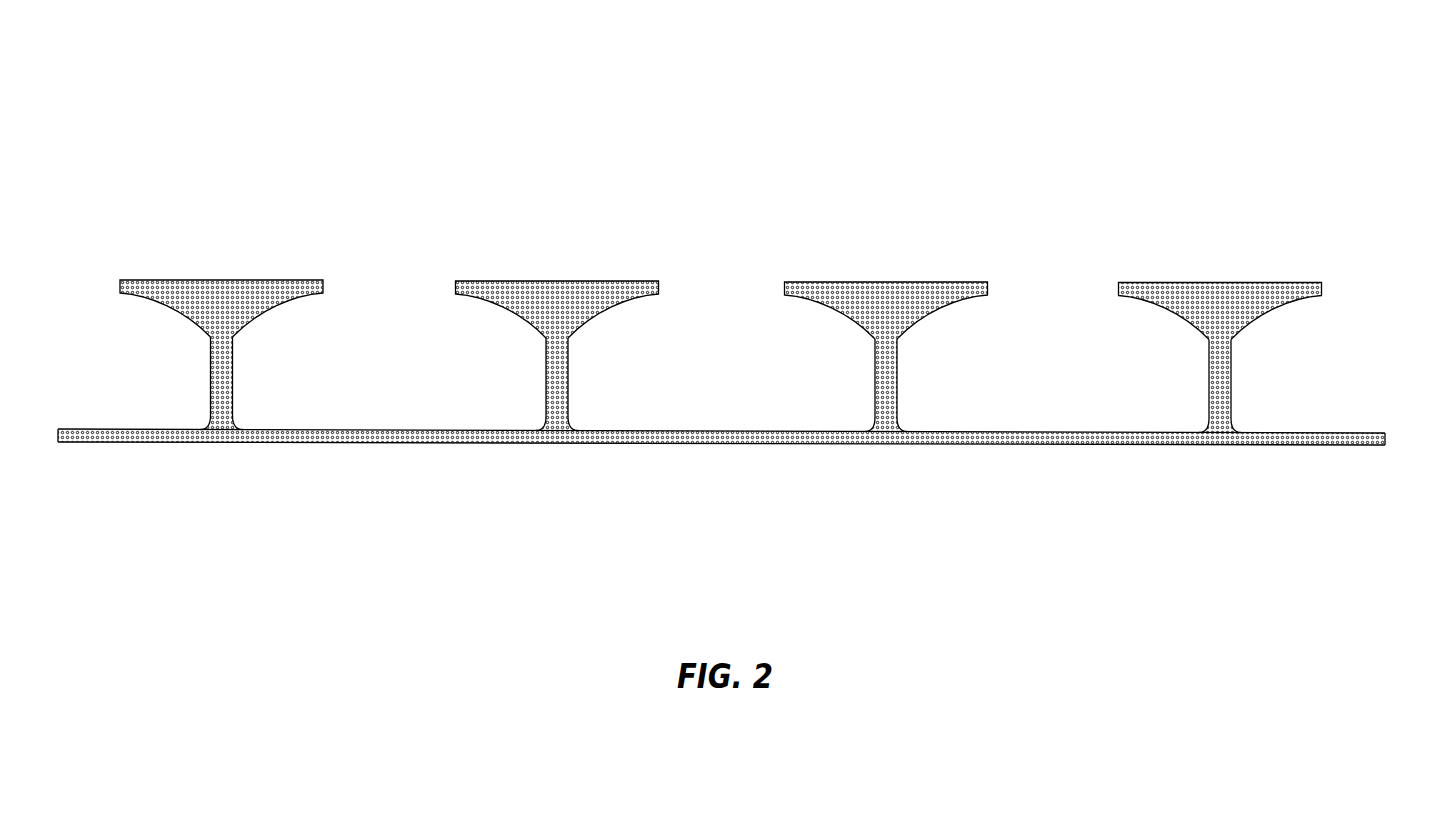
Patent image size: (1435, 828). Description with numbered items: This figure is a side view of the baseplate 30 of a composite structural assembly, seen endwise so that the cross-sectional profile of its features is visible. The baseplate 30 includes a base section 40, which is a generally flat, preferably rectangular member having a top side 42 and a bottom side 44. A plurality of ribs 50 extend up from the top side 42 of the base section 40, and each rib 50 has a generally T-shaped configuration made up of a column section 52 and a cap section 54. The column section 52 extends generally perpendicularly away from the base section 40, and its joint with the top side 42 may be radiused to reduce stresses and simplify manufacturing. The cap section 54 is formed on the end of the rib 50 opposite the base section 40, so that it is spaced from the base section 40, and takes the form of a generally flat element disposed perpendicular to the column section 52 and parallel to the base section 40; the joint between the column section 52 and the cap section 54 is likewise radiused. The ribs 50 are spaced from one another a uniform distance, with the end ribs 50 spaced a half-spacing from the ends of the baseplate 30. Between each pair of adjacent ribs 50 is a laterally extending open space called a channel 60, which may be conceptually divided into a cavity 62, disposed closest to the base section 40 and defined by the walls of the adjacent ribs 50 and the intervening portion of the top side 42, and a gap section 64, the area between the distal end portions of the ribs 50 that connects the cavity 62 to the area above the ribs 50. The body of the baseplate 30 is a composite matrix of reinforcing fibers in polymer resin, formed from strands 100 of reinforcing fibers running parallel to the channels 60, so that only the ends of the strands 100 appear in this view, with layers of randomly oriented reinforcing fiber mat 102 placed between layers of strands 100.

The baseplate 30 is at (684, 152).
The base section 40 is at (721, 439).
The top side 42 is at (1032, 430).
The bottom side 44 is at (1093, 447).
The rib 50 is at (858, 250).
The column section 52 is at (548, 365).
The cap section 54 is at (540, 292).
The channel 60 is at (1040, 270).
The cavity 62 is at (954, 389).
The gap section 64 is at (1090, 300).
The strands 100 is at (217, 327).
The mat 102 is at (188, 300).